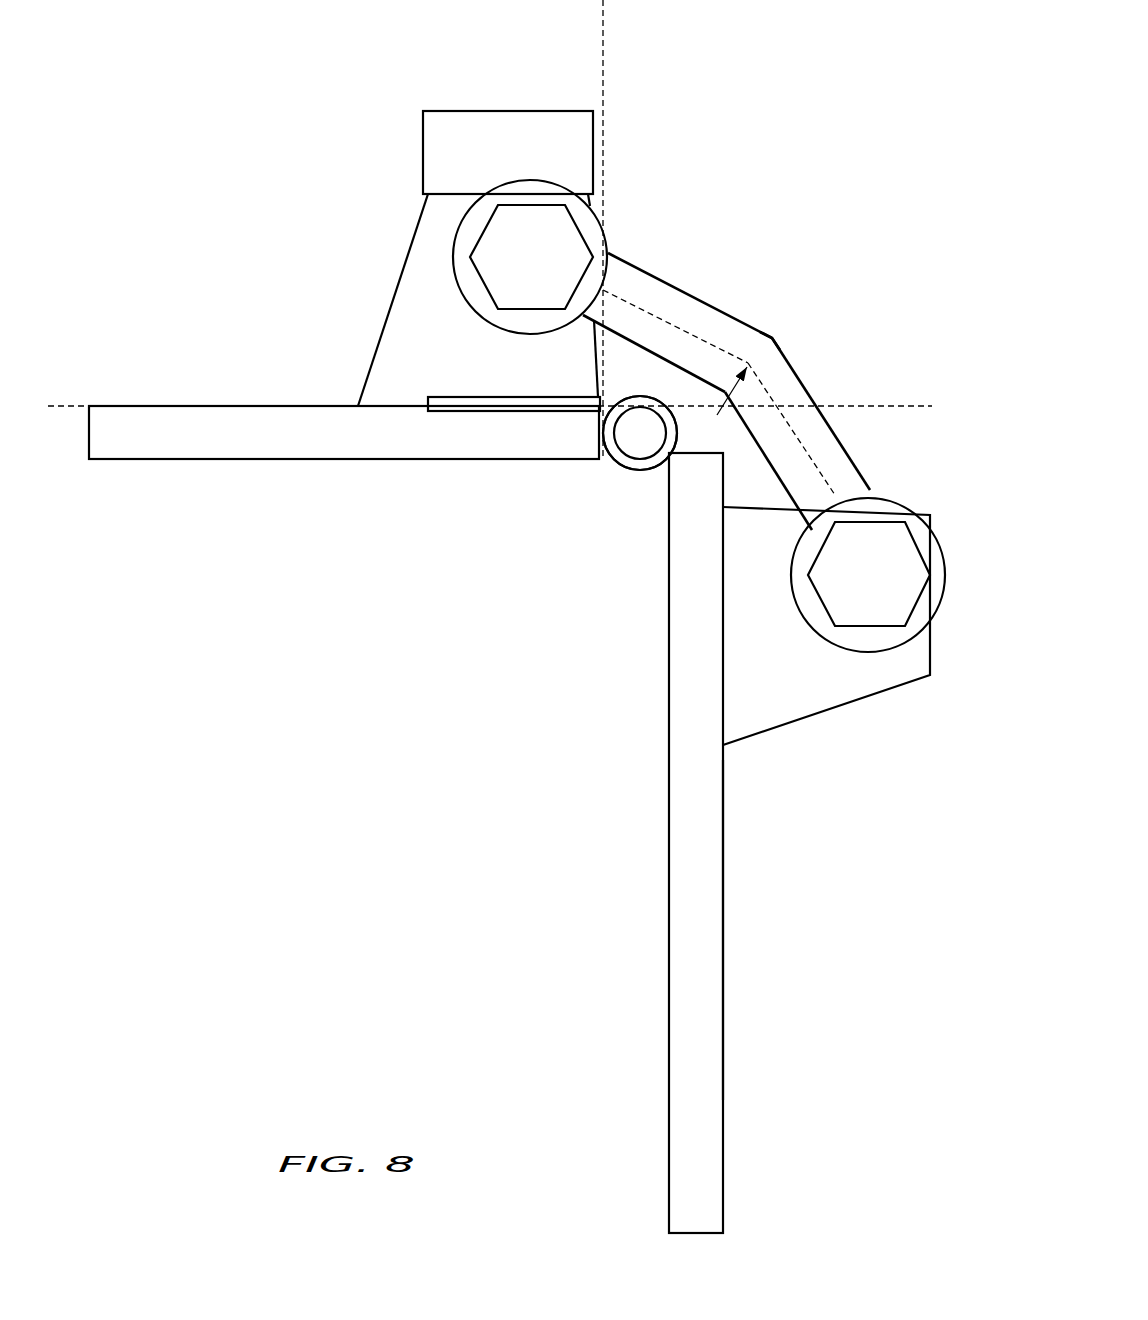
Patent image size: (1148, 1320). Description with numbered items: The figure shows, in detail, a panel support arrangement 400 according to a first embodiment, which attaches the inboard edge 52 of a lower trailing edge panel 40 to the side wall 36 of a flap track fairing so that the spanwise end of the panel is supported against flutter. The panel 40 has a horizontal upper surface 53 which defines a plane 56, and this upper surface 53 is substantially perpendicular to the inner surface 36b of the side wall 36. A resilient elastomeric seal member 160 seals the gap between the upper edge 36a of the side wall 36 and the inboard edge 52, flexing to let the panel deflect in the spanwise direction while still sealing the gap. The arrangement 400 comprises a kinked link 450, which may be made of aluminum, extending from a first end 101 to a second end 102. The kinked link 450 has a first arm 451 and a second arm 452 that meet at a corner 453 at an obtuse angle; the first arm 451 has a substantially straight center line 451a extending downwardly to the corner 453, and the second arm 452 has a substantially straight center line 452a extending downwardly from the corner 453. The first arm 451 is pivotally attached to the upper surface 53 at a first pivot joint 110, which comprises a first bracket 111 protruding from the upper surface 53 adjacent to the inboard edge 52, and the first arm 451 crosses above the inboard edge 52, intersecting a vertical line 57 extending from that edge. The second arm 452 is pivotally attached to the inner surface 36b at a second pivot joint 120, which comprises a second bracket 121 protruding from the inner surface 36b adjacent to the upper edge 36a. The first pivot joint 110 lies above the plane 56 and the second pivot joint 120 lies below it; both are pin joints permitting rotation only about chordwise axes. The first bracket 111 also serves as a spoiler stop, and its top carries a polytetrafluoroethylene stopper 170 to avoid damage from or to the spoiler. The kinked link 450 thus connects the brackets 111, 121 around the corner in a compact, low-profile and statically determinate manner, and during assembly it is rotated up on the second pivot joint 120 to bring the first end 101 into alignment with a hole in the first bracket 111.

The side wall 36 is at (694, 1026).
The upper edge 36a is at (692, 453).
The inner surface 36b is at (723, 929).
The first lower trailing edge panel 40 is at (177, 423).
The inboard edge 52 is at (600, 433).
The upper surface 53 is at (123, 406).
The plane 56 is at (903, 408).
The vertical line 57 is at (602, 51).
The first end 101 is at (469, 231).
The second end 102 is at (715, 649).
The first pivot joint 110 is at (508, 240).
The first bracket 111 is at (402, 356).
The second pivot joint 120 is at (884, 603).
The second bracket 121 is at (843, 686).
The seal member 160 is at (628, 465).
The PTFE stopper 170 is at (477, 130).
The panel support arrangement 400 is at (769, 291).
The kinked link 450 is at (759, 331).
The first arm 451 is at (665, 270).
The center line of first arm 451a is at (690, 332).
The second arm 452 is at (807, 387).
The center line of second arm 452a is at (802, 445).
The corner 453 is at (772, 338).